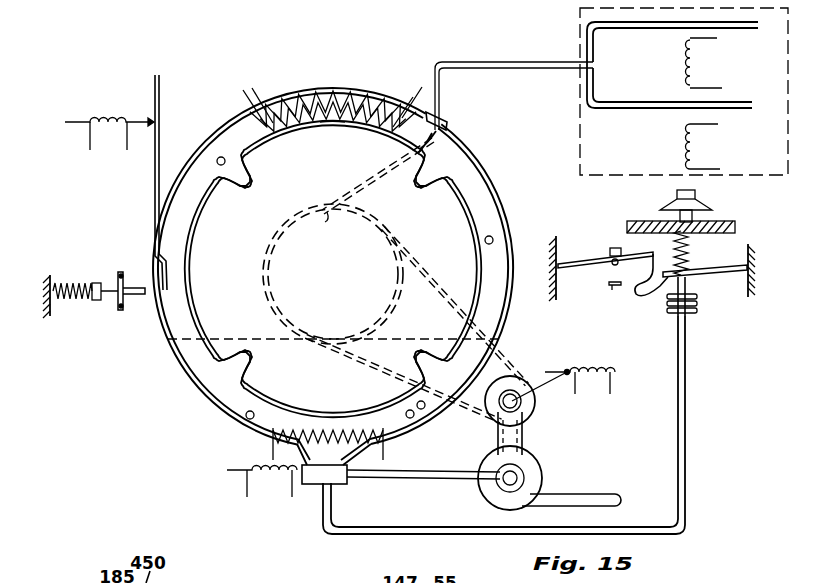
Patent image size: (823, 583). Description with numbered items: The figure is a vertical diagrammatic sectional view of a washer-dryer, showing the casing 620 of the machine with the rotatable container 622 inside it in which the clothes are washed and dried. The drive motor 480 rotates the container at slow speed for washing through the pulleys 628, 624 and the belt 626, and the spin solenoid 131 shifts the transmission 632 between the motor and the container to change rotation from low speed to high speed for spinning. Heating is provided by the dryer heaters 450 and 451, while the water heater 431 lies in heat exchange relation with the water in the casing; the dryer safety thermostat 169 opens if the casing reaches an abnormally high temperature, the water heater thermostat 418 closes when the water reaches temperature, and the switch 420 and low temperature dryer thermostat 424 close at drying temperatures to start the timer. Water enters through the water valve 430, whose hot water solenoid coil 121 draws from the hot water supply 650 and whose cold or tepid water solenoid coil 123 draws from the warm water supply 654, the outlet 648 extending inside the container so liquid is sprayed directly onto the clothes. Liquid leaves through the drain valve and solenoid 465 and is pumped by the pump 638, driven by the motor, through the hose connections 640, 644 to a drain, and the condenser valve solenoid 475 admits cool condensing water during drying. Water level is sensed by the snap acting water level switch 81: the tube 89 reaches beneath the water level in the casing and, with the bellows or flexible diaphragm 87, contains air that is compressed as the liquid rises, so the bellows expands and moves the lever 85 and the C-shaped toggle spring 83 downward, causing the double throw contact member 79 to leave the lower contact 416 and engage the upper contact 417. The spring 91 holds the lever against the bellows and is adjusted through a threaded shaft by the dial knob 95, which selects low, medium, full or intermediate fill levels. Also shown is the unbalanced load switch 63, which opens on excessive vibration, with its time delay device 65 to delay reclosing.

The casing 620 is at (500, 192).
The rotatable container 622 is at (192, 292).
The dryer heater 450 is at (340, 86).
The water heater 431 is at (330, 428).
The dryer heater 451 is at (322, 124).
The dryer safety thermostat 169 is at (221, 157).
The water heater thermostat 418 is at (249, 419).
The switch 420 is at (423, 409).
The low temperature dryer thermostat 424 is at (411, 418).
The outlet 648 is at (327, 216).
The pulley 624 is at (304, 210).
The belt 626 is at (505, 352).
The split phase drive motor 480 is at (544, 348).
The pulley 628 is at (536, 405).
The transmission 632 is at (497, 420).
The pump 638 is at (490, 505).
The hose connection 644 is at (605, 493).
The hose connection 640 is at (404, 478).
The drain valve and solenoid 465 is at (302, 487).
The tube 89 is at (686, 447).
The spin solenoid 131 is at (612, 372).
The water valve 430 is at (580, 93).
The hot water supply 650 is at (748, 30).
The warm water supply 654 is at (745, 108).
The hot water solenoid coil 121 is at (686, 50).
The cold or tepid water solenoid coil 123 is at (686, 136).
The condenser valve solenoid 475 is at (112, 128).
The time delay device 65 is at (97, 301).
The unbalanced load switch 63 is at (119, 273).
The dial knob 95 is at (696, 194).
The double throw contact member 79 is at (633, 245).
The spring 91 is at (672, 235).
The lever 85 is at (706, 268).
The snap acting water level switch 81 is at (695, 280).
The bellows or flexible diaphragm 87 is at (666, 305).
The lower contact 416 is at (609, 250).
The upper contact 417 is at (608, 284).
The C-shaped toggle spring 83 is at (636, 296).